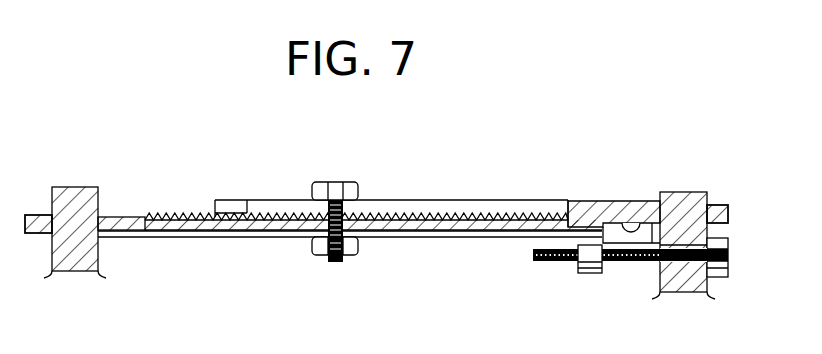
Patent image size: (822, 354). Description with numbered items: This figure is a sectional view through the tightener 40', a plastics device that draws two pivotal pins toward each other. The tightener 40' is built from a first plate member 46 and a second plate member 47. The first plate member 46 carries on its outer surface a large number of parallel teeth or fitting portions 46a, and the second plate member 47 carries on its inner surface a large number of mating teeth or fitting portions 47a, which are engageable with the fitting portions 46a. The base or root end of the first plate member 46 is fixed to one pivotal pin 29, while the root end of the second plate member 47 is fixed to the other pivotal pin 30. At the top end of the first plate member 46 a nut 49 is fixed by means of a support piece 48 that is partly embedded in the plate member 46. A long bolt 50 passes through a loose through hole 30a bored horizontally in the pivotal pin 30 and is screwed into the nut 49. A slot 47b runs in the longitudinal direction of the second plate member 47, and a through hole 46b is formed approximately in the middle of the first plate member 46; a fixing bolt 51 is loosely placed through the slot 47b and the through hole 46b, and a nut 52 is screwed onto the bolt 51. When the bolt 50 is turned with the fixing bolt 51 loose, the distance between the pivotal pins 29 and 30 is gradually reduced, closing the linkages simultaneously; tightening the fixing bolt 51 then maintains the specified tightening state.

The pivotal pin 29 is at (72, 187).
The pivotal pin 30 is at (688, 202).
The loose through hole 30a is at (688, 270).
The tightener 40' is at (391, 165).
The first plate member 46 is at (205, 236).
The teeth or fitting portions 46a is at (173, 212).
The through hole 46b is at (375, 237).
The second plate member 47 is at (580, 202).
The mating teeth or fitting portions 47a is at (648, 221).
The slot 47b is at (517, 207).
The support piece 48 is at (620, 222).
The nut 49 is at (590, 274).
The long bolt 50 is at (635, 263).
The fixing bolt 51 is at (333, 182).
The nut 52 is at (352, 256).